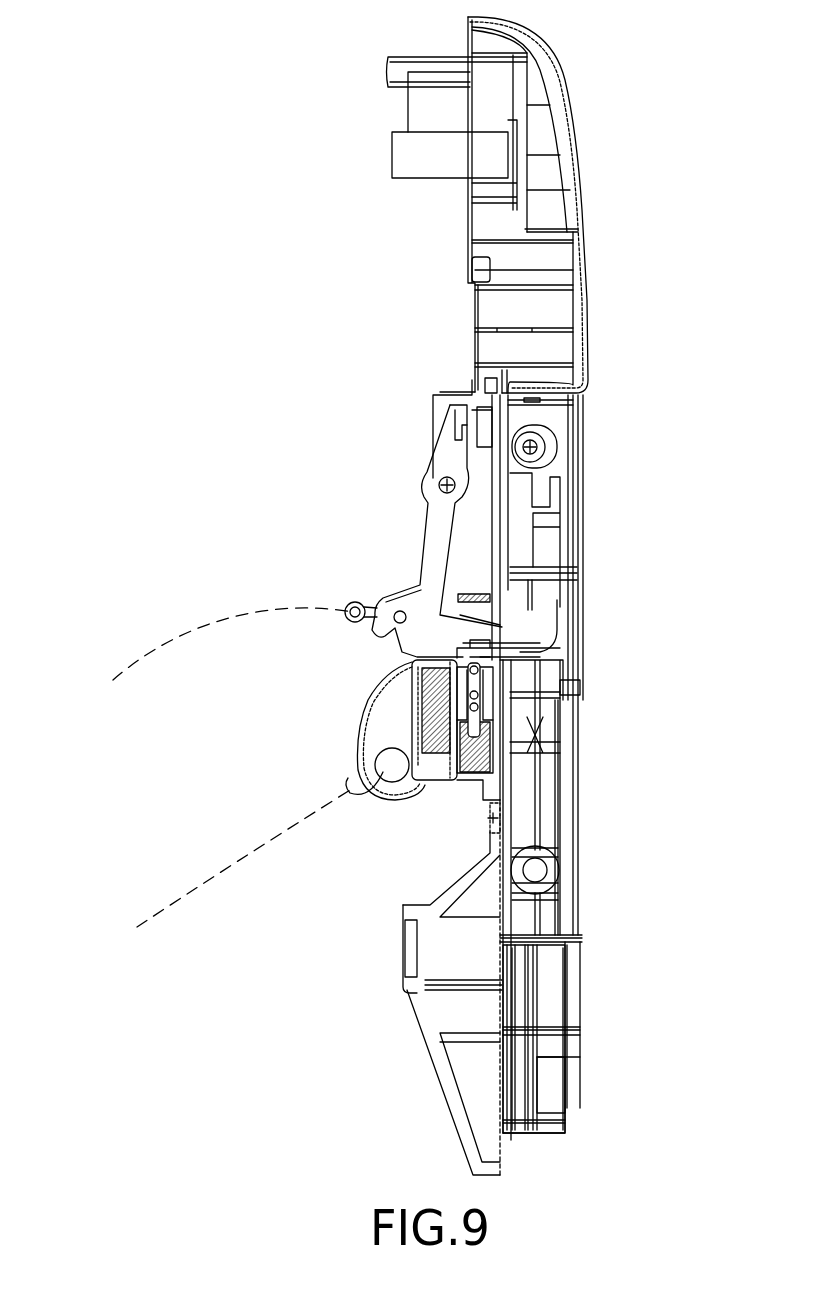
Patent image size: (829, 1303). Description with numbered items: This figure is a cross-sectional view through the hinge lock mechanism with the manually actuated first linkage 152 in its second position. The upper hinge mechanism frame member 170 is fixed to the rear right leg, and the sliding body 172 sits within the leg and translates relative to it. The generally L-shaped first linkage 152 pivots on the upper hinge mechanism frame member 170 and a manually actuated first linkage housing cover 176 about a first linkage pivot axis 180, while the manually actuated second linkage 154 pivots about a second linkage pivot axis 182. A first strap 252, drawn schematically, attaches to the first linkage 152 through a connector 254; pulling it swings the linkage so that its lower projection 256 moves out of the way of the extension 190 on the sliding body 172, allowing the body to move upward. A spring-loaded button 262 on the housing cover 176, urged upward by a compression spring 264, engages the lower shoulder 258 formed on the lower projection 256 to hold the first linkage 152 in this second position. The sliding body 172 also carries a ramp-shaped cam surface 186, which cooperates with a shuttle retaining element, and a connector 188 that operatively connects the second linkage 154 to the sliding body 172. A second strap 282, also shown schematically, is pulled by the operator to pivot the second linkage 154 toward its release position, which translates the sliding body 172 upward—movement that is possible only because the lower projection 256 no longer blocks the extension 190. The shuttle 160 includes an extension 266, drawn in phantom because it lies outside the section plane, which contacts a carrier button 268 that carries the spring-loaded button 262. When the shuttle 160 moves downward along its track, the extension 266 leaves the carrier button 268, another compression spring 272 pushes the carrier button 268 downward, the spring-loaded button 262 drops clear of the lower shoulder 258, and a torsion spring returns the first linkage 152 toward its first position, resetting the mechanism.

The upper hinge mechanism frame member 170 is at (609, 266).
The sliding body 172 is at (624, 966).
The first linkage pivot axis 180 is at (441, 480).
The second linkage pivot axis 182 is at (532, 447).
The manually actuated first linkage 152 is at (433, 550).
The connector 254 is at (346, 600).
The first strap 252 is at (137, 660).
The lower projection 256 is at (490, 630).
The lower shoulder 258 is at (470, 645).
The spring-loaded button 262 is at (478, 657).
The compression spring 272 is at (425, 675).
The manually actuated second linkage 154 is at (380, 700).
The manually actuated first linkage housing cover 176 is at (413, 733).
The compression spring 264 is at (488, 753).
The extension 190 is at (548, 776).
The carrier button 268 is at (457, 783).
The extension 266 is at (490, 820).
The connector 188 is at (552, 903).
The second strap 282 is at (138, 921).
The shuttle 160 is at (415, 995).
The cam surface 186 is at (572, 1010).